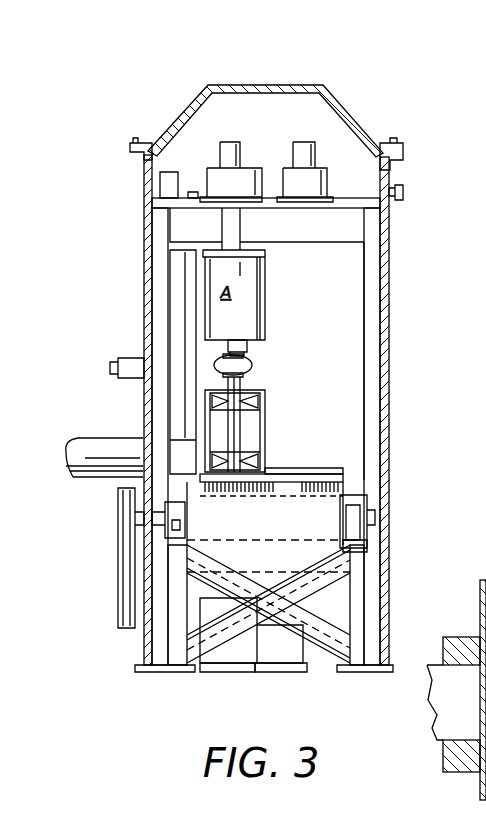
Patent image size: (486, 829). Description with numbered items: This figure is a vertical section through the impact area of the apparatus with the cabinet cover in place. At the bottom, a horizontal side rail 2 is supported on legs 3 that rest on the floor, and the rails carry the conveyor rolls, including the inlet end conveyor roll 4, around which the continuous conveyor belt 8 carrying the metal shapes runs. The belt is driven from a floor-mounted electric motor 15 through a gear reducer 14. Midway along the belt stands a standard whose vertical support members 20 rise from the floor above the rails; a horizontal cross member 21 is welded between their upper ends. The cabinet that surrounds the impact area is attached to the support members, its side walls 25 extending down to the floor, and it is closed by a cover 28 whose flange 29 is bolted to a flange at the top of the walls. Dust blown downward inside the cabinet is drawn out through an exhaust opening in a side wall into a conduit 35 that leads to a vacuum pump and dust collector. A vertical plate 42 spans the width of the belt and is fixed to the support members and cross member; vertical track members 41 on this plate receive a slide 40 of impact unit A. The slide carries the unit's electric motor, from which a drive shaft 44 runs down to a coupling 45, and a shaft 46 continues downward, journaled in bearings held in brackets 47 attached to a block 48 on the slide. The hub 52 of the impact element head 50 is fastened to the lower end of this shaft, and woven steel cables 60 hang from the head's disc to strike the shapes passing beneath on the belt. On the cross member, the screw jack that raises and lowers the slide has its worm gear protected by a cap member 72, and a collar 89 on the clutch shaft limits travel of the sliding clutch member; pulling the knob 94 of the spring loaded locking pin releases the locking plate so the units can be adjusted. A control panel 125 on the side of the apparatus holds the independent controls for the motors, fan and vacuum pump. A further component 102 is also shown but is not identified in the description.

The cover 28 is at (356, 120).
The flange 29 is at (135, 143).
The side walls 25 is at (143, 289).
The vertical support members 20 is at (160, 260).
The vertical plate 42 is at (357, 337).
The cross member 21 is at (180, 208).
The cap member 72 is at (245, 172).
The control box 102 is at (165, 178).
The knob 94 is at (405, 189).
The drive shaft 44 is at (247, 346).
The coupling 45 is at (252, 366).
The shaft 46 is at (248, 421).
The brackets 47 is at (258, 401).
The block 48 is at (258, 428).
The hub 52 is at (305, 465).
The impact element head 50 is at (355, 474).
The woven steel cable 60 is at (345, 499).
The inlet end conveyor roll 4 is at (350, 516).
The conveyor belt 8 is at (262, 530).
The side rail 2 is at (363, 550).
The legs 3 is at (178, 656).
The gear reducer 14 is at (221, 660).
The electric motor 15 is at (292, 660).
The slide 40 is at (203, 344).
The vertical track members 41 is at (178, 346).
The control panel 125 is at (128, 372).
The conduit 35 is at (92, 437).
The collar 89 is at (470, 636).